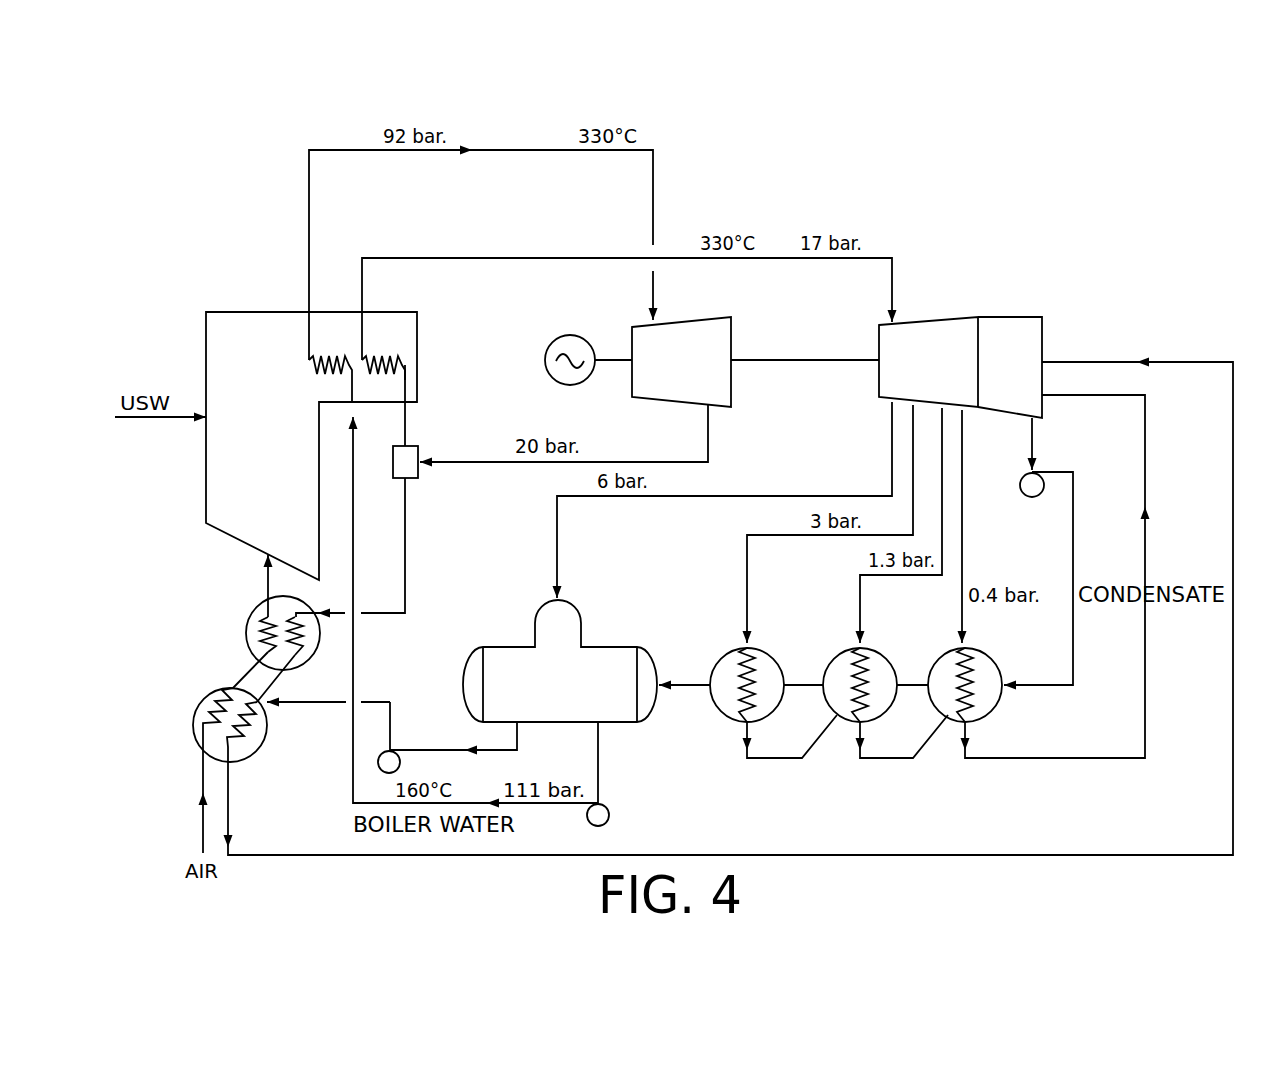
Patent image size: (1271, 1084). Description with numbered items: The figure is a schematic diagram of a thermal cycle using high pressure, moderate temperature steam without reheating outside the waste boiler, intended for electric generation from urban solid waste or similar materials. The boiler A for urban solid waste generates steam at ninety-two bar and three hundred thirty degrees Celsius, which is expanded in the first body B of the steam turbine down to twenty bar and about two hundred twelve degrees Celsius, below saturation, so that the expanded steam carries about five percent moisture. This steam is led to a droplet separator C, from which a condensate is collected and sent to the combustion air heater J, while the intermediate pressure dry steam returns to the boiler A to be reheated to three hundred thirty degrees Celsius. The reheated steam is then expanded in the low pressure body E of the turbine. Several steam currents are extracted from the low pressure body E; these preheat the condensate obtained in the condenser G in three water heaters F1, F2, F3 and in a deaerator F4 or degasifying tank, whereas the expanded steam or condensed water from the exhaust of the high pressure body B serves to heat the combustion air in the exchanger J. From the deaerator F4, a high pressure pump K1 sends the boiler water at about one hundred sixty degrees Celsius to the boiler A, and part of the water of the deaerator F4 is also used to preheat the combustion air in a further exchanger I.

The boiler A is at (311, 446).
The first body of the steam turbine B is at (638, 362).
The droplet separator C is at (397, 462).
The low pressure body of the steam turbine E is at (928, 362).
The condenser G is at (1010, 367).
The exchanger for preheating combustion air I is at (234, 727).
The combustion air heater J is at (276, 631).
The water heater F1 is at (965, 685).
The water heater F2 is at (860, 685).
The water heater F3 is at (747, 685).
The deaerator F4 is at (560, 661).
The high pressure pump K1 is at (616, 815).